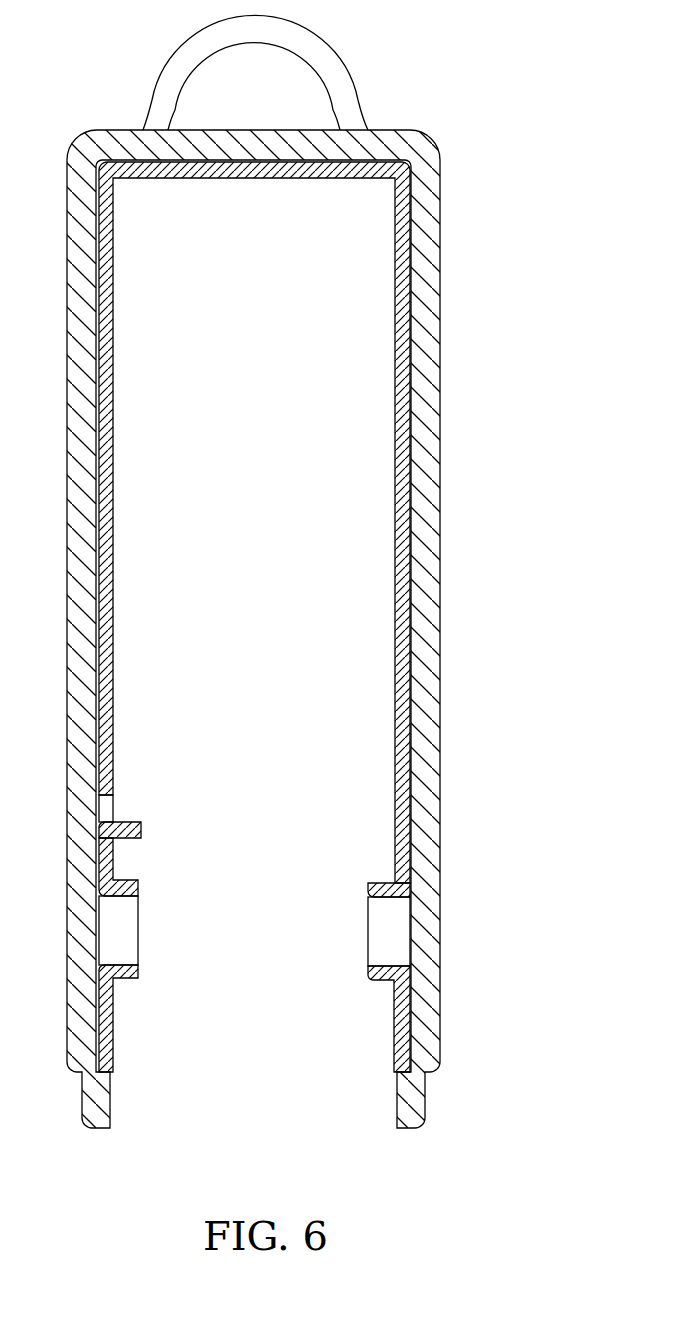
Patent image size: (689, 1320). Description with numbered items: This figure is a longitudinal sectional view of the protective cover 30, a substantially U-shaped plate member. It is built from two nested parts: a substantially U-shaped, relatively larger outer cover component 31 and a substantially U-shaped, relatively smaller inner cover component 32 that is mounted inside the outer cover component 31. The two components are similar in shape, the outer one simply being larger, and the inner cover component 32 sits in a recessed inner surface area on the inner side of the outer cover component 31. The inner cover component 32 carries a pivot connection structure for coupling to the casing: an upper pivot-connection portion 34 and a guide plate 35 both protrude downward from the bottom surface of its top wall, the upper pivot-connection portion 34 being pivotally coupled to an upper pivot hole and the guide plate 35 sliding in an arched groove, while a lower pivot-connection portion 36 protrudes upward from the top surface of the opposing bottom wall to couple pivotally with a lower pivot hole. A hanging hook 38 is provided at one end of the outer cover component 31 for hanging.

The protective cover 30 is at (324, 569).
The outer cover component 31 is at (441, 371).
The inner cover component 32 is at (400, 536).
The upper pivot-connection portion 34 is at (136, 891).
The guide plate 35 is at (133, 822).
The lower pivot-connection portion 36 is at (376, 884).
The hanging hook 38 is at (335, 76).